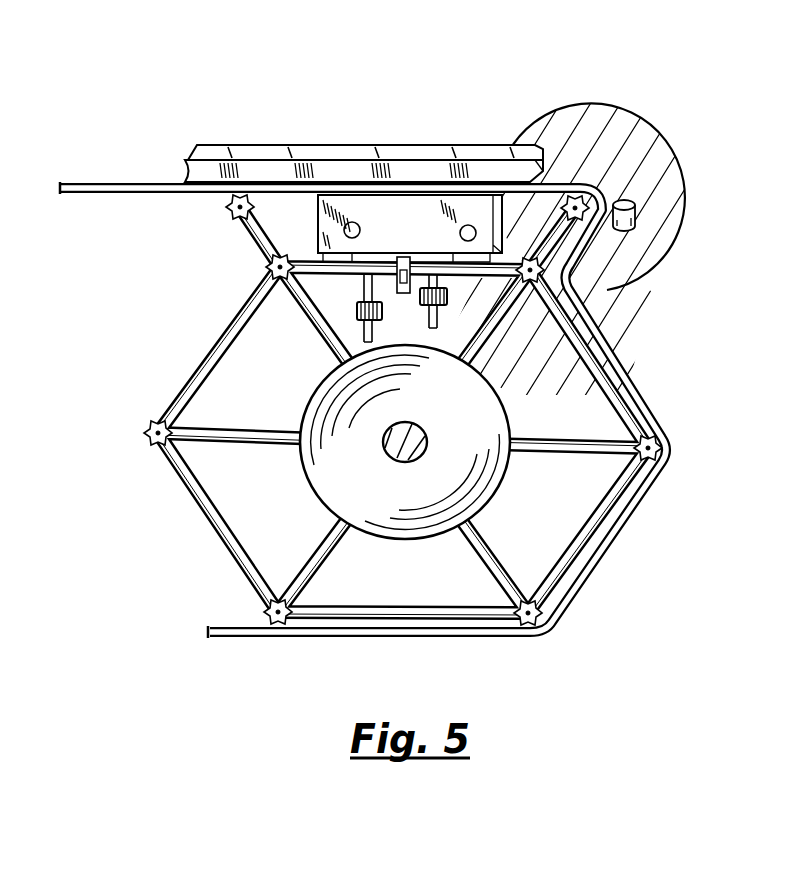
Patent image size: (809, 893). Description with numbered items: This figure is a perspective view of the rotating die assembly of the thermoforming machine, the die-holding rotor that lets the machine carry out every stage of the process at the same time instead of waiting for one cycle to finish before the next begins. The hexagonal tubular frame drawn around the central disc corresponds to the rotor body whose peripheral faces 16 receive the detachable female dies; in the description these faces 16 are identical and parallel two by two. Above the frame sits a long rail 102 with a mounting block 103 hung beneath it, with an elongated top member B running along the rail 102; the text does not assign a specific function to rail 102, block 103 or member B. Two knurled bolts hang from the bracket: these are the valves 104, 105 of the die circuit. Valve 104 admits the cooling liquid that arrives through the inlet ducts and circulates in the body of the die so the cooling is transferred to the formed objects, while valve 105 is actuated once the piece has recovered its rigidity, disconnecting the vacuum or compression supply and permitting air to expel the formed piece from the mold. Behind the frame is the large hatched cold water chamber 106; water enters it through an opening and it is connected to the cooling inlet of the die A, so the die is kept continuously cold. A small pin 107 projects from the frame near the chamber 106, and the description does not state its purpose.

The face 16 is at (618, 530).
The support rail 102 is at (364, 121).
The mounting bracket block 103 is at (442, 158).
The valve 104 is at (357, 302).
The valve 105 is at (447, 297).
The cold water chamber 106 is at (647, 250).
The pin 107 is at (636, 218).
The cooling inlet of the die A is at (470, 230).
The beam top face B is at (257, 145).